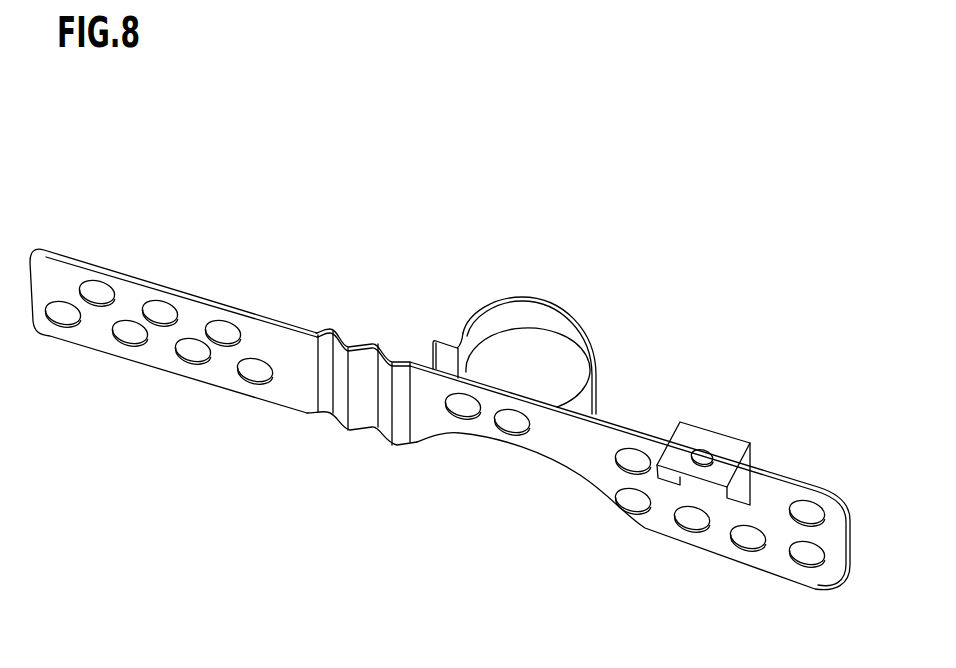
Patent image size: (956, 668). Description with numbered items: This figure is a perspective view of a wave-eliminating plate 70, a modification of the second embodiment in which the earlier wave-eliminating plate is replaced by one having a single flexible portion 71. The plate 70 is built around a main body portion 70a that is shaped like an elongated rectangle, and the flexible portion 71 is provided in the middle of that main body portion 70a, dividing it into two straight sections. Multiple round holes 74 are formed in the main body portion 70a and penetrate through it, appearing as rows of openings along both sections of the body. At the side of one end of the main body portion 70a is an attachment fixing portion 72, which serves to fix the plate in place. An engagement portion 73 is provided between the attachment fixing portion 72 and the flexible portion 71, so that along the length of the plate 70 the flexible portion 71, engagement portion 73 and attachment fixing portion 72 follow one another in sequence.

The wave-eliminating plate 70 is at (440, 430).
The main body portion 70a is at (291, 412).
The flexible portion 71 is at (380, 342).
The attachment fixing portion 72 is at (752, 452).
The engagement portion 73 is at (545, 298).
The round holes 74 is at (130, 334).